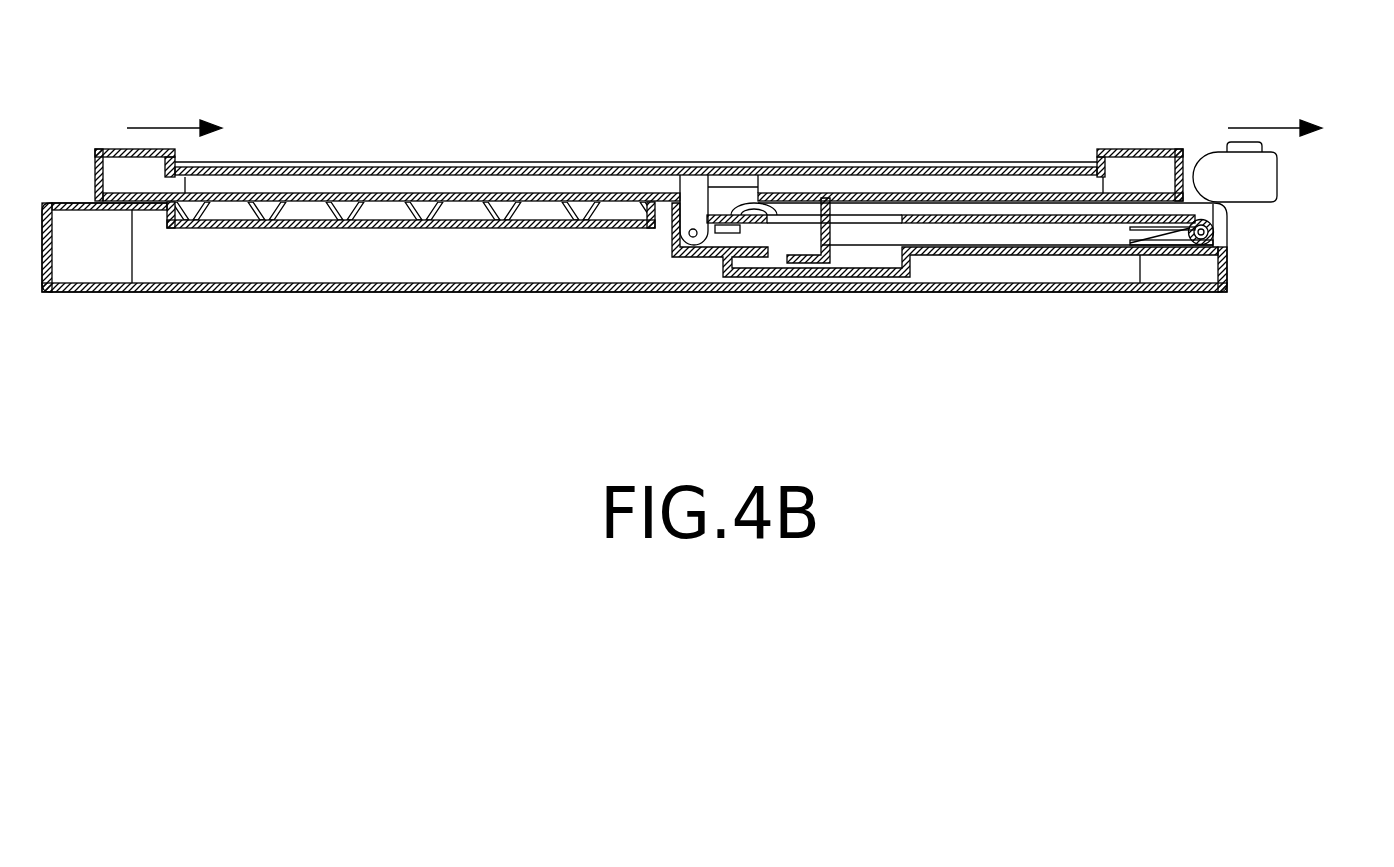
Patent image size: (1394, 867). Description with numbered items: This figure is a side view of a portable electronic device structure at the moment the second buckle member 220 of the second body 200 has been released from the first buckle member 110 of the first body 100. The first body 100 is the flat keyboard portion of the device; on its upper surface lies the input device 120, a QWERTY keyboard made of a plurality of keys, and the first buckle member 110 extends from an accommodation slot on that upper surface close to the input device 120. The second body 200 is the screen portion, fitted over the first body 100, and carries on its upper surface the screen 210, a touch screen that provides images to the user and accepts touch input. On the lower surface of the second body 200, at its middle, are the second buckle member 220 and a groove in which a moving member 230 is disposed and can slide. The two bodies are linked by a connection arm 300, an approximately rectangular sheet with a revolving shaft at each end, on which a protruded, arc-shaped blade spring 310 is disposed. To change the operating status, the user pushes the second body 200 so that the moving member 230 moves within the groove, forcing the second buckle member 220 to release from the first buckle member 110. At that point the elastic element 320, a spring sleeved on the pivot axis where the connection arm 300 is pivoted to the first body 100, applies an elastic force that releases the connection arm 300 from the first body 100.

The first body 100 is at (1122, 308).
The first buckle member 110 is at (742, 262).
The input device 120 is at (462, 212).
The second body 200 is at (1140, 135).
The screen 210 is at (242, 166).
The second buckle member 220 is at (803, 262).
The moving member 230 is at (738, 203).
The connection arm 300 is at (1180, 218).
The blade spring 310 is at (755, 204).
The elastic element 320 is at (1170, 258).